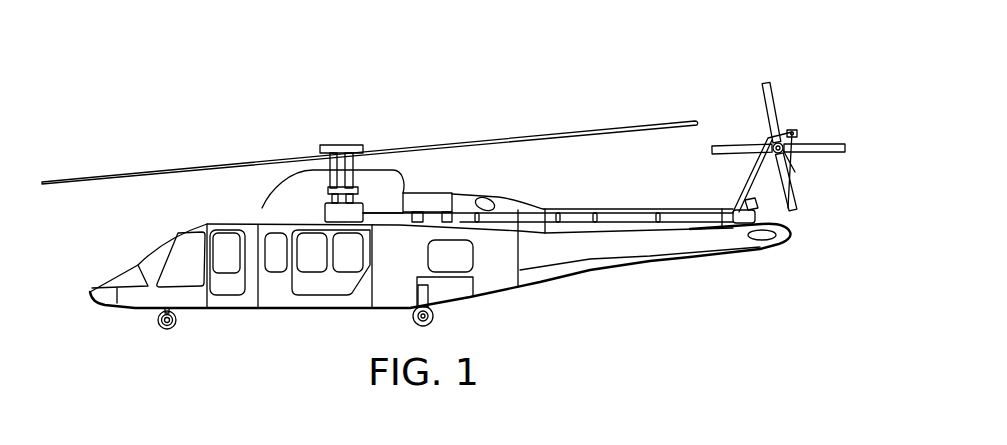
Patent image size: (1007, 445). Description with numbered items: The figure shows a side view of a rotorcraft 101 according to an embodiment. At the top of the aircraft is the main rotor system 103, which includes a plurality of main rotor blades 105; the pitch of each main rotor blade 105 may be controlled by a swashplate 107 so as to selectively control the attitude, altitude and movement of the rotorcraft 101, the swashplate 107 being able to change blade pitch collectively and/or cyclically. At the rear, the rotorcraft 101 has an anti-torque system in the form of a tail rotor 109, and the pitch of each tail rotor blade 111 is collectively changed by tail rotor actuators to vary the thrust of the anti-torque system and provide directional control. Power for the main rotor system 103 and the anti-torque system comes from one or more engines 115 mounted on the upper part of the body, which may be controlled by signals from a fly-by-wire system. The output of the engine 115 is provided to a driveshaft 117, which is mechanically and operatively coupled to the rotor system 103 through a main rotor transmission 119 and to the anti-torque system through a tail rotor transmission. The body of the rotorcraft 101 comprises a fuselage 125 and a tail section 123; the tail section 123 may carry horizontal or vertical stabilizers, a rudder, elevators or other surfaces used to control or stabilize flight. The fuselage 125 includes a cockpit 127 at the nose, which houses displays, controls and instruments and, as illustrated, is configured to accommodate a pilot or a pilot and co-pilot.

The rotorcraft 101 is at (238, 93).
The main rotor system 103 is at (373, 128).
The main rotor blade 105 is at (183, 168).
The swashplate 107 is at (298, 175).
The tail rotor 109 is at (801, 115).
The tail rotor blade 111 is at (825, 154).
The engine 115 is at (428, 200).
The driveshaft 117 is at (385, 222).
The main rotor transmission 119 is at (325, 215).
The tail section 123 is at (652, 262).
The fuselage 125 is at (277, 309).
The cockpit 127 is at (150, 252).